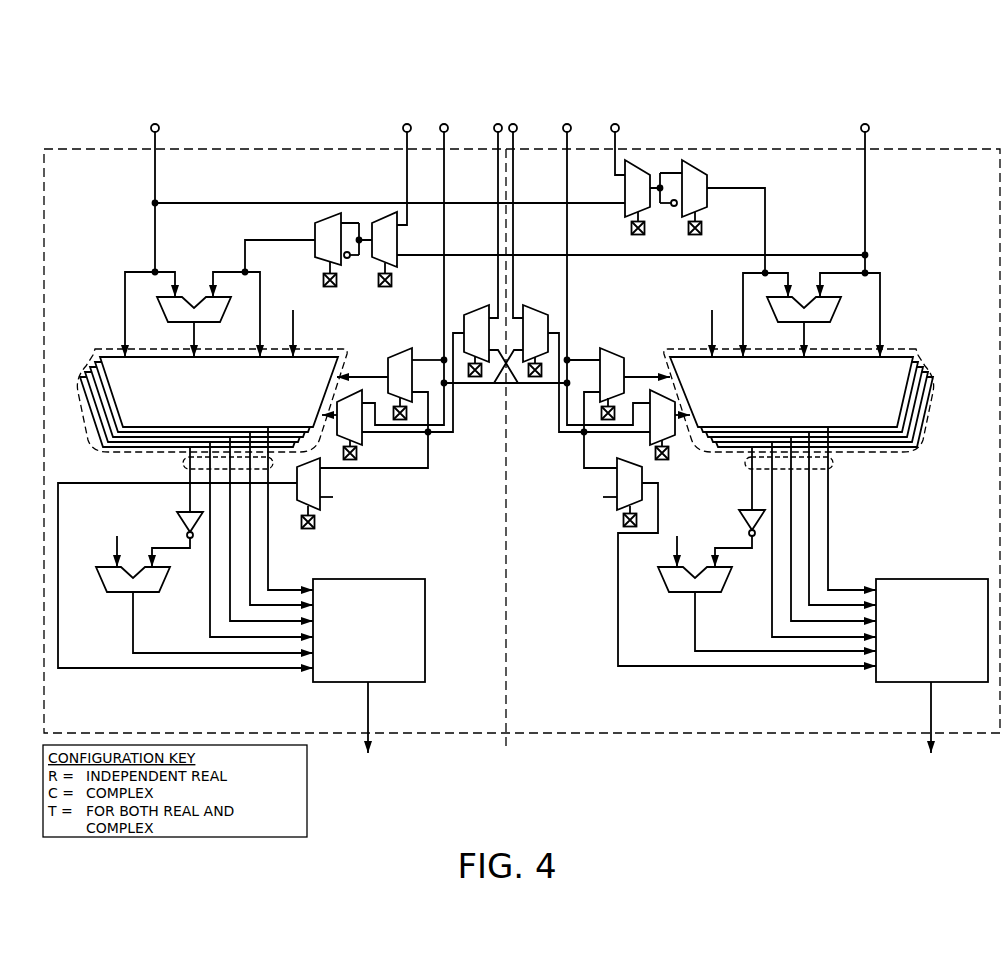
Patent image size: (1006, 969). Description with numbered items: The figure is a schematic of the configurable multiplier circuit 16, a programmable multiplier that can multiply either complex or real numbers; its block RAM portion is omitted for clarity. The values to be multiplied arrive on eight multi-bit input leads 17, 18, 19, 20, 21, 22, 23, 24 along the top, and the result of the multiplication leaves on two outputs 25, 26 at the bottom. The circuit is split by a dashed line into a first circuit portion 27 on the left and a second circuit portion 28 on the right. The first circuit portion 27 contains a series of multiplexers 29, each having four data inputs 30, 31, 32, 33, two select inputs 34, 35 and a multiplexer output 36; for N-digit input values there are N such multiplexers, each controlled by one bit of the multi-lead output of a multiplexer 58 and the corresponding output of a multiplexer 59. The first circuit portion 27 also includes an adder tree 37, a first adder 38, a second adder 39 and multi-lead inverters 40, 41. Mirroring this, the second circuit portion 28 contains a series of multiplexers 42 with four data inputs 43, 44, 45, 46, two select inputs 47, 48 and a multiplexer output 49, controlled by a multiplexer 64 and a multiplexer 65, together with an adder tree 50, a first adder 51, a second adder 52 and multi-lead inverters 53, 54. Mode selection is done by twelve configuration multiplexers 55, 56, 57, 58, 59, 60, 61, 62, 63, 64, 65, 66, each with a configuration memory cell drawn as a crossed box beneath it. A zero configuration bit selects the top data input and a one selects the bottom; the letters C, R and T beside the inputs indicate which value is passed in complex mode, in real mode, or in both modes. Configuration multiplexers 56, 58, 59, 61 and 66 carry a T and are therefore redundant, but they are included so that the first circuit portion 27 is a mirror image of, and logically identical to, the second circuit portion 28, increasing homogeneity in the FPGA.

The configurable multiplier circuit 16 is at (768, 149).
The input lead 17 is at (160, 128).
The input lead 18 is at (861, 128).
The input lead 19 is at (442, 131).
The input lead 20 is at (571, 128).
The input lead 21 is at (403, 128).
The input lead 22 is at (494, 128).
The input lead 23 is at (619, 128).
The input lead 24 is at (517, 128).
The output 25 is at (363, 730).
The output 26 is at (926, 730).
The first circuit portion 27 is at (448, 733).
The second circuit portion 28 is at (567, 733).
The series of multiplexers 29 is at (94, 434).
The data input 30 is at (120, 346).
The data input 31 is at (192, 343).
The data input 32 is at (258, 346).
The data input 33 is at (298, 348).
The select input 34 is at (342, 374).
The select input 35 is at (322, 425).
The multiplexer output 36 is at (182, 469).
The adder tree 37 is at (405, 579).
The first adder 38 is at (194, 297).
The second adder 39 is at (137, 567).
The multi-lead inverter 40 is at (348, 259).
The multi-lead inverter 41 is at (179, 517).
The series of multiplexers 42 is at (917, 434).
The data input 43 is at (882, 348).
The data input 44 is at (812, 343).
The data input 45 is at (745, 348).
The data input 46 is at (711, 346).
The select input 47 is at (669, 373).
The select input 48 is at (690, 425).
The multiplexer output 49 is at (834, 469).
The adder tree 50 is at (901, 579).
The first adder 51 is at (804, 297).
The second adder 52 is at (670, 594).
The multi-lead inverter 53 is at (673, 207).
The multi-lead inverter 54 is at (741, 515).
The configuration multiplexer 55 is at (398, 233).
The configuration multiplexer 56 is at (318, 256).
The configuration multiplexer 57 is at (471, 310).
The configuration multiplexer 58 is at (400, 350).
The configuration multiplexer 59 is at (364, 440).
The configuration multiplexer 60 is at (297, 498).
The configuration multiplexer 61 is at (708, 178).
The configuration multiplexer 62 is at (625, 196).
The configuration multiplexer 63 is at (537, 310).
The configuration multiplexer 64 is at (611, 350).
The configuration multiplexer 65 is at (648, 440).
The configuration multiplexer 66 is at (616, 484).